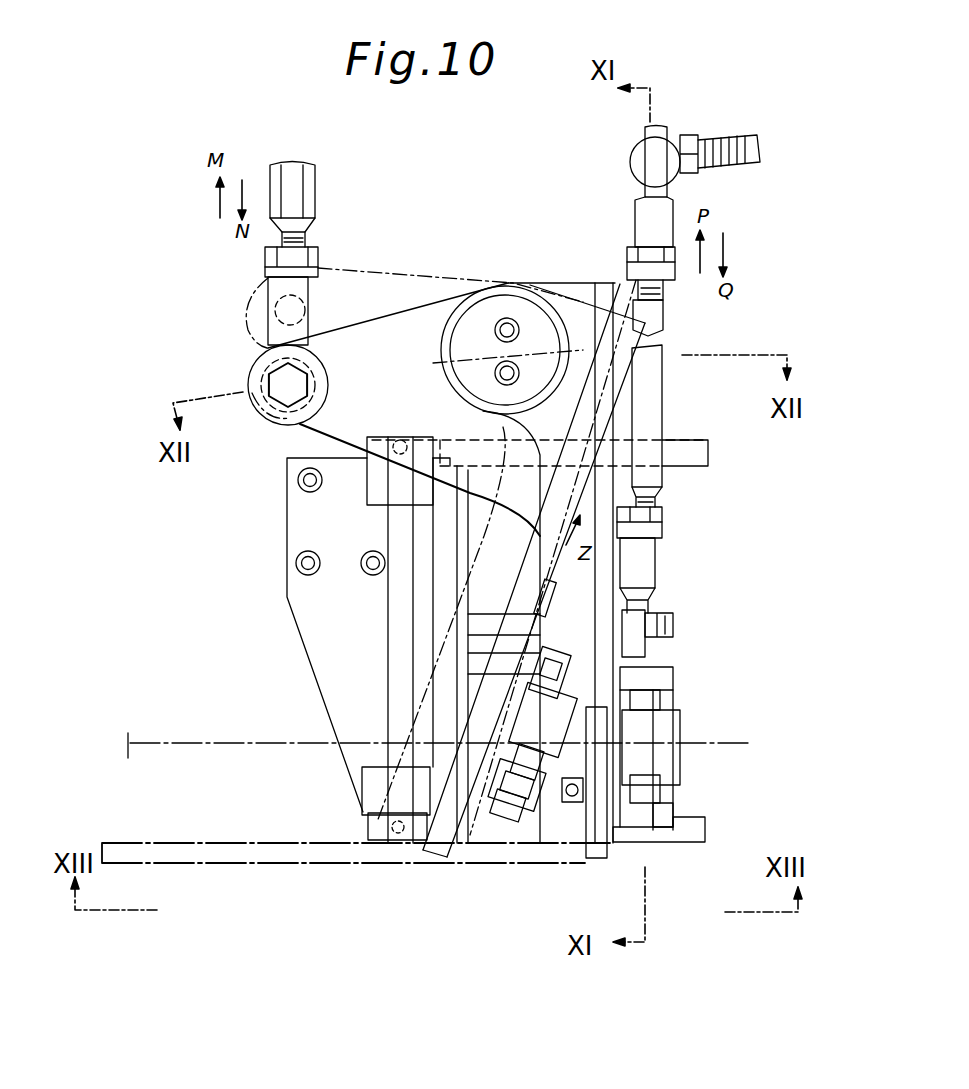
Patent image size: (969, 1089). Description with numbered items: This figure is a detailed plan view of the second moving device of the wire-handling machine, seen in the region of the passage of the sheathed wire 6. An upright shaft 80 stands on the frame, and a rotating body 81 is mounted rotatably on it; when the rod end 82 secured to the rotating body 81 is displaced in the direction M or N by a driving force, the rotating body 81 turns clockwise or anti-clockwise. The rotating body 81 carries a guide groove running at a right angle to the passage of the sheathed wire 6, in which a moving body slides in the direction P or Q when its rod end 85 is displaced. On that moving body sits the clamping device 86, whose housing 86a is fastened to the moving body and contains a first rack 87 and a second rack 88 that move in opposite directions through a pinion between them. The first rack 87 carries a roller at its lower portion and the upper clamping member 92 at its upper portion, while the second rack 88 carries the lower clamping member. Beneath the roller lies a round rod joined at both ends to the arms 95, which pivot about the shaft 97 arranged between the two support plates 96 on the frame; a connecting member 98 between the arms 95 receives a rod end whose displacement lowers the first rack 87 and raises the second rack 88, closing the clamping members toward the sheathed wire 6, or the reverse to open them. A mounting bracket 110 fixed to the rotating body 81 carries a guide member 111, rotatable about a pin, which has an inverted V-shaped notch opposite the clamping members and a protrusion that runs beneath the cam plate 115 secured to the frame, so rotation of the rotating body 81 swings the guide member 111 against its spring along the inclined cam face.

The sheathed wire 6 is at (258, 742).
The shaft 80 is at (489, 318).
The rotating body 81 is at (413, 283).
The rod end 82 is at (312, 195).
The rod end 85 is at (650, 553).
The clamping device 86 is at (683, 757).
The housing 86a is at (673, 690).
The first rack 87 is at (660, 790).
The second rack 88 is at (658, 700).
The upper clamping member 92 is at (672, 726).
The arms 95 is at (682, 443).
The support plates 96 is at (373, 500).
The shaft 97 is at (388, 652).
The connecting member 98 is at (463, 525).
The mounting bracket 110 is at (572, 810).
The guide member 111 is at (598, 858).
The cam plate 115 is at (397, 858).